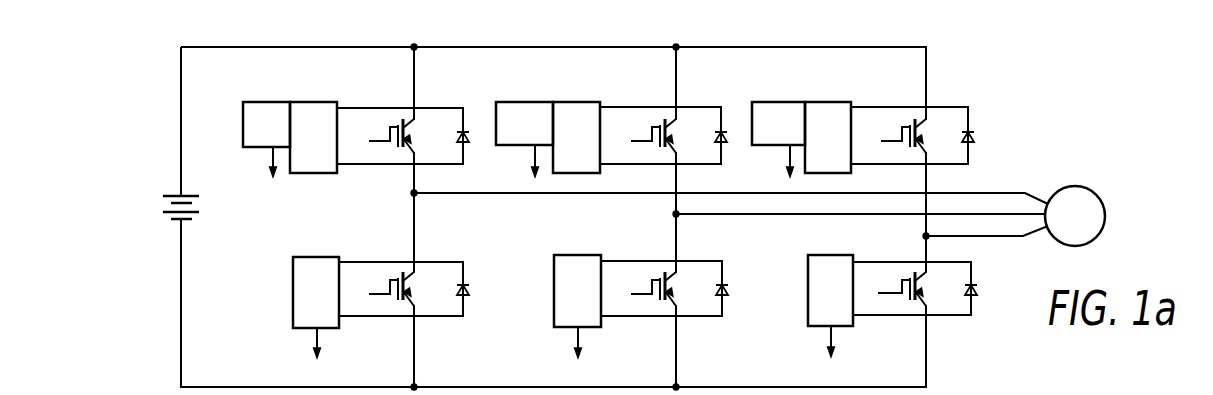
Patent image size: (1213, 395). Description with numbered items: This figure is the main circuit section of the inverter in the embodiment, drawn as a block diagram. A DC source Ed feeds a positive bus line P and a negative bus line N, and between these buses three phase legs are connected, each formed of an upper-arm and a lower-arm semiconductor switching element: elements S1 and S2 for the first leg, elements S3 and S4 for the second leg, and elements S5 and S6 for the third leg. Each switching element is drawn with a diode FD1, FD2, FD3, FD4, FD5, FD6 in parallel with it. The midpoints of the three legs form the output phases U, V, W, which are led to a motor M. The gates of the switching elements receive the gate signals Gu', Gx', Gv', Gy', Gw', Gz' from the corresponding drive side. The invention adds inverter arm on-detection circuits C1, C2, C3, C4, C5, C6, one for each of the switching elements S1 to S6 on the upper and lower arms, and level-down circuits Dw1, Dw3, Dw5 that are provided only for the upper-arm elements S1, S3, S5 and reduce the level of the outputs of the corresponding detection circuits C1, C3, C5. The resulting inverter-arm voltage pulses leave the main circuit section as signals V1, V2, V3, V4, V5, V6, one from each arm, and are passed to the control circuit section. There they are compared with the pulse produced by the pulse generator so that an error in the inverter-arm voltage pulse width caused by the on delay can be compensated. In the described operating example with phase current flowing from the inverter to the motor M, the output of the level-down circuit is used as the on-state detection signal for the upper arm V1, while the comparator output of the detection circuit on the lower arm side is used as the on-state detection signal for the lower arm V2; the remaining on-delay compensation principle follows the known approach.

The positive DC bus terminal P is at (195, 173).
The negative DC bus terminal N is at (198, 244).
The DC power source Ed is at (169, 223).
The U-phase output terminal U is at (729, 214).
The V-phase output terminal V is at (859, 229).
The W-phase output terminal W is at (985, 243).
The motor M is at (1075, 216).
The level-down circuit Dw1 is at (266, 124).
The level-down circuit Dw3 is at (524, 123).
The level-down circuit Dw5 is at (778, 123).
The inverter arm on-detection circuit C1 is at (313, 137).
The inverter arm on-detection circuit C2 is at (316, 292).
The inverter arm on-detection circuit C3 is at (576, 137).
The inverter arm on-detection circuit C4 is at (577, 291).
The inverter arm on-detection circuit C5 is at (828, 137).
The inverter arm on-detection circuit C6 is at (830, 290).
The gate signal for S1 Gu' is at (375, 129).
The gate signal for S2 Gx' is at (373, 282).
The gate signal for S3 Gv' is at (636, 130).
The gate signal for S4 Gy' is at (638, 282).
The gate signal for S5 Gw' is at (882, 129).
The gate signal for S6 Gz' is at (889, 279).
The semiconductor switching element S1 is at (419, 136).
The semiconductor switching element S2 is at (421, 288).
The semiconductor switching element S3 is at (680, 135).
The semiconductor switching element S4 is at (682, 287).
The semiconductor switching element S5 is at (931, 135).
The semiconductor switching element S6 is at (933, 286).
The freewheeling diode of S1 FD1 is at (418, 136).
The freewheeling diode of S2 FD2 is at (421, 291).
The freewheeling diode of S3 FD3 is at (681, 136).
The freewheeling diode of S4 FD4 is at (684, 290).
The freewheeling diode of S5 FD5 is at (930, 136).
The freewheeling diode of S6 FD6 is at (935, 291).
The on-state detection signal for the upper arm V1 is at (263, 169).
The on-state detection signal for the lower arm V2 is at (317, 357).
The detected voltage output of S3 arm V3 is at (523, 168).
The detected voltage output of S4 arm V4 is at (582, 355).
The detected voltage output of S5 arm V5 is at (778, 168).
The detected voltage output of S6 arm V6 is at (832, 354).